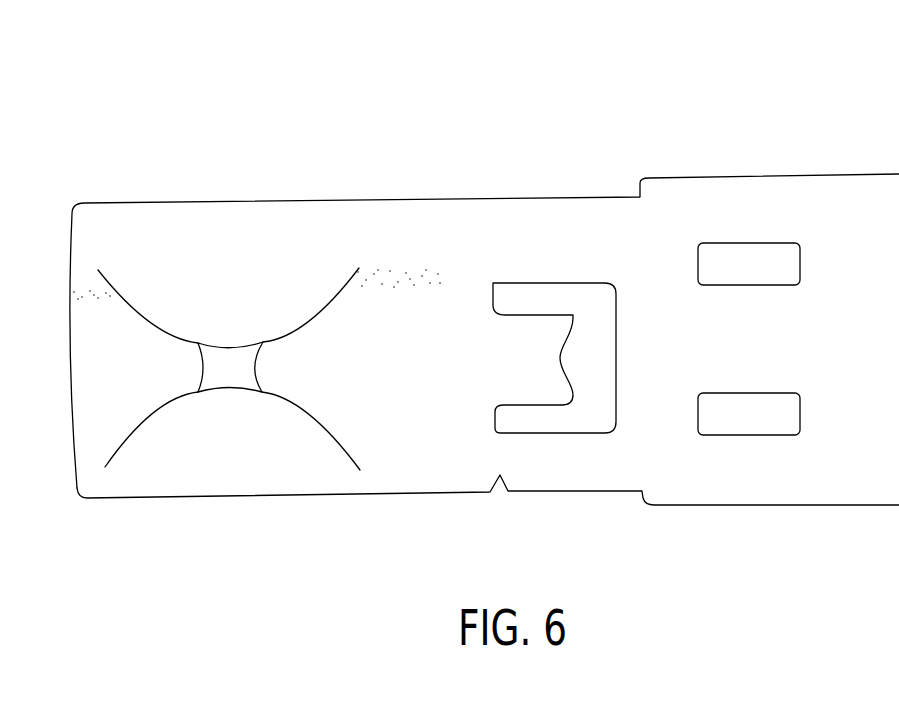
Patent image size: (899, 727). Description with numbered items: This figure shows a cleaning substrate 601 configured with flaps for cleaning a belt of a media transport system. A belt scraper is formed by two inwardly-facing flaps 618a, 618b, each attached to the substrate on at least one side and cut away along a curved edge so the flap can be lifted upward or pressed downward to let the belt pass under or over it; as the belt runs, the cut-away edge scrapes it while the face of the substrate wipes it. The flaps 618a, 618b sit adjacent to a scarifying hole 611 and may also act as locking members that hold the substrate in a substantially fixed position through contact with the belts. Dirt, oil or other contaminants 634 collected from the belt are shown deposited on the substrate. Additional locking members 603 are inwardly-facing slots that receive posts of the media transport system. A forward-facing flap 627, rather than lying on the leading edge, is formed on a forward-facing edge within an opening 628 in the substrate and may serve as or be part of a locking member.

The connector assembly 601 is at (152, 106).
The locking members 603 is at (500, 208).
The scarifying hole 611 is at (220, 363).
The inwardly-facing flap 618a is at (230, 312).
The inwardly-facing flap 618b is at (230, 427).
The forward-facing flap 627 is at (513, 395).
The opening 628 is at (597, 415).
The contaminants 634 is at (408, 278).